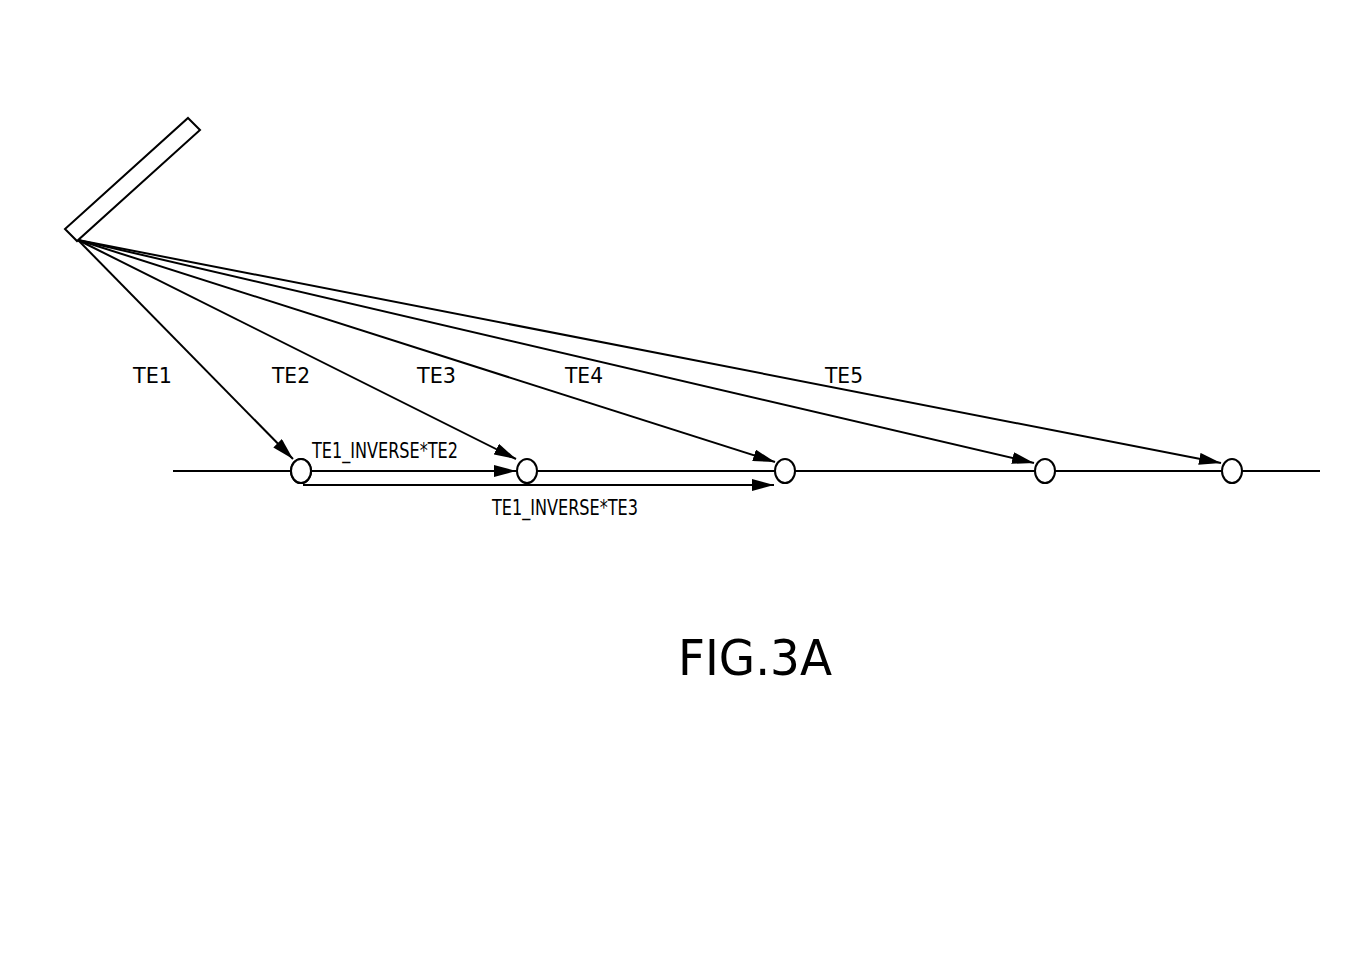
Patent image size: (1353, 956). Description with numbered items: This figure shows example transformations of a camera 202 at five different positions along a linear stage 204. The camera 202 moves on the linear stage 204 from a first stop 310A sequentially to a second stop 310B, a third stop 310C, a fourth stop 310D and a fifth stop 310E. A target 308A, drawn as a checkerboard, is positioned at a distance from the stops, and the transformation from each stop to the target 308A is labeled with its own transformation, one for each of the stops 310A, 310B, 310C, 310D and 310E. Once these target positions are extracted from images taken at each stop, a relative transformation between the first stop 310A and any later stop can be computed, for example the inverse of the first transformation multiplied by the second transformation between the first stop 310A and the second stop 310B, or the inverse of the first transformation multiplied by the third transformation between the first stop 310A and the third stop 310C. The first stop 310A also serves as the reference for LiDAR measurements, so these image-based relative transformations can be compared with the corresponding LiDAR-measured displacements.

The target 308A is at (143, 157).
The linear stage 204 is at (1278, 470).
The camera 202 is at (292, 482).
The first stop 310A is at (310, 480).
The second stop 310B is at (505, 482).
The third stop 310C is at (795, 480).
The fourth stop 310D is at (1052, 478).
The fifth stop 310E is at (1240, 478).